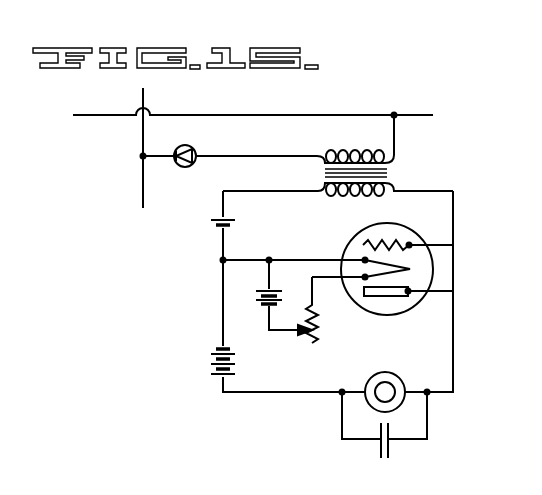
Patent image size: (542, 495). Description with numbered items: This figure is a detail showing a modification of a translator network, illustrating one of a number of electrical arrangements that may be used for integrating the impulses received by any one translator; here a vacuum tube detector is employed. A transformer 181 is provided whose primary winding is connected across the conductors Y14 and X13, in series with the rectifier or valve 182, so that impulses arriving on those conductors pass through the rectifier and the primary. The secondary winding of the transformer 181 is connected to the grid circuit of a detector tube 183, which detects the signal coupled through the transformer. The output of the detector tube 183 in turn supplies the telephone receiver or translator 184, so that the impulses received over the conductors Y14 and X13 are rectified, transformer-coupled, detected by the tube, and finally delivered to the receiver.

The transformer 181 is at (388, 173).
The rectifier or valve 182 is at (190, 146).
The detector tube 183 is at (433, 268).
The telephone receiver or translator 184 is at (398, 379).
The conductor X13 is at (143, 172).
The conductor Y14 is at (418, 115).